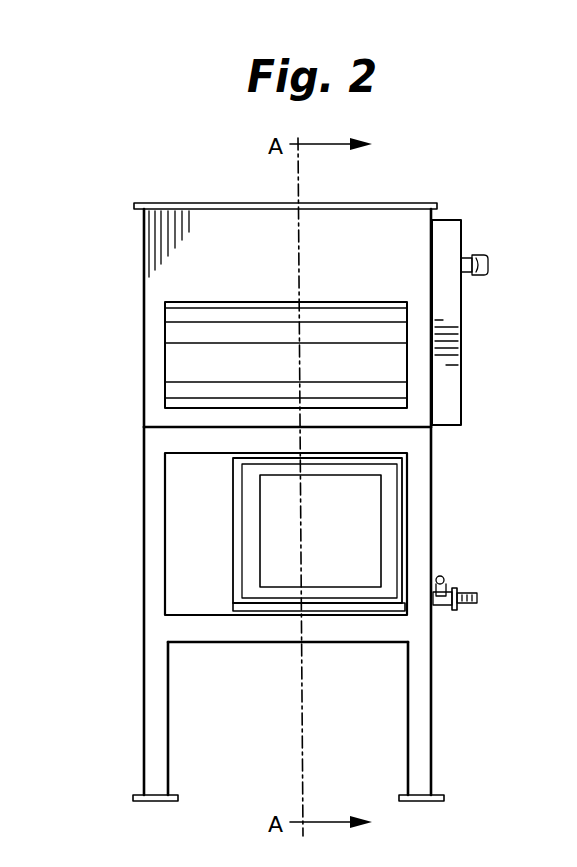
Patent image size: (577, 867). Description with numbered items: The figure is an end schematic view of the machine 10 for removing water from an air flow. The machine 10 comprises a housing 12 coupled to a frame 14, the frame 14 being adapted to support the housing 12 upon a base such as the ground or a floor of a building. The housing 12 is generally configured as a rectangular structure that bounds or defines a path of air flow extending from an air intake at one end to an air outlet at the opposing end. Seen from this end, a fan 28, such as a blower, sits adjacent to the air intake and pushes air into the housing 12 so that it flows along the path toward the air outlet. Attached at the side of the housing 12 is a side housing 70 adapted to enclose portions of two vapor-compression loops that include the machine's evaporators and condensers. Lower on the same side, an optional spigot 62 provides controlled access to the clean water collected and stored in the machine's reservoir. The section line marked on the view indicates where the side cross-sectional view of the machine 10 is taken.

The machine 10 is at (140, 166).
The housing 12 is at (142, 262).
The frame 14 is at (142, 621).
The fan 28 is at (180, 360).
The spigot 62 is at (454, 608).
The side housing 70 is at (459, 220).